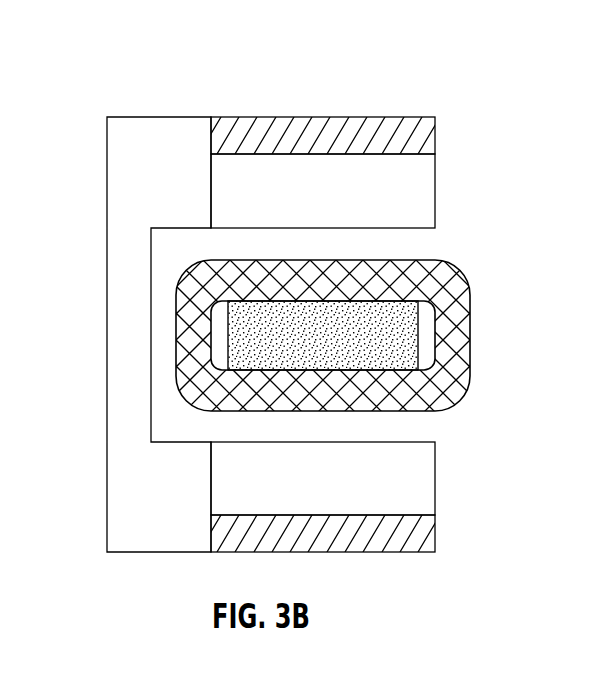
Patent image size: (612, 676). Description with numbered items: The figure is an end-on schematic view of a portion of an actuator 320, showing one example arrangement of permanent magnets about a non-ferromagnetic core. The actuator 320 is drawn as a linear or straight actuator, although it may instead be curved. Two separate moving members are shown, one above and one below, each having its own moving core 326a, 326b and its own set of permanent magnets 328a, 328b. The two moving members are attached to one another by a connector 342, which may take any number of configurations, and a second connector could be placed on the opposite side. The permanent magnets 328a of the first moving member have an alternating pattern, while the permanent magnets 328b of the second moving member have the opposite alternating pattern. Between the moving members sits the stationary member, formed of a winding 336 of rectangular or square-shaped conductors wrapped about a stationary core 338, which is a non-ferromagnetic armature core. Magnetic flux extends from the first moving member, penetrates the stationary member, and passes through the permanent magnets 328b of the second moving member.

The actuator 320 is at (125, 48).
The connector 342 is at (115, 157).
The moving core 326a is at (332, 127).
The permanent magnets 328a is at (427, 202).
The winding 336 is at (468, 303).
The stationary core 338 is at (403, 340).
The permanent magnets 328b is at (422, 462).
The moving core 326b is at (417, 527).